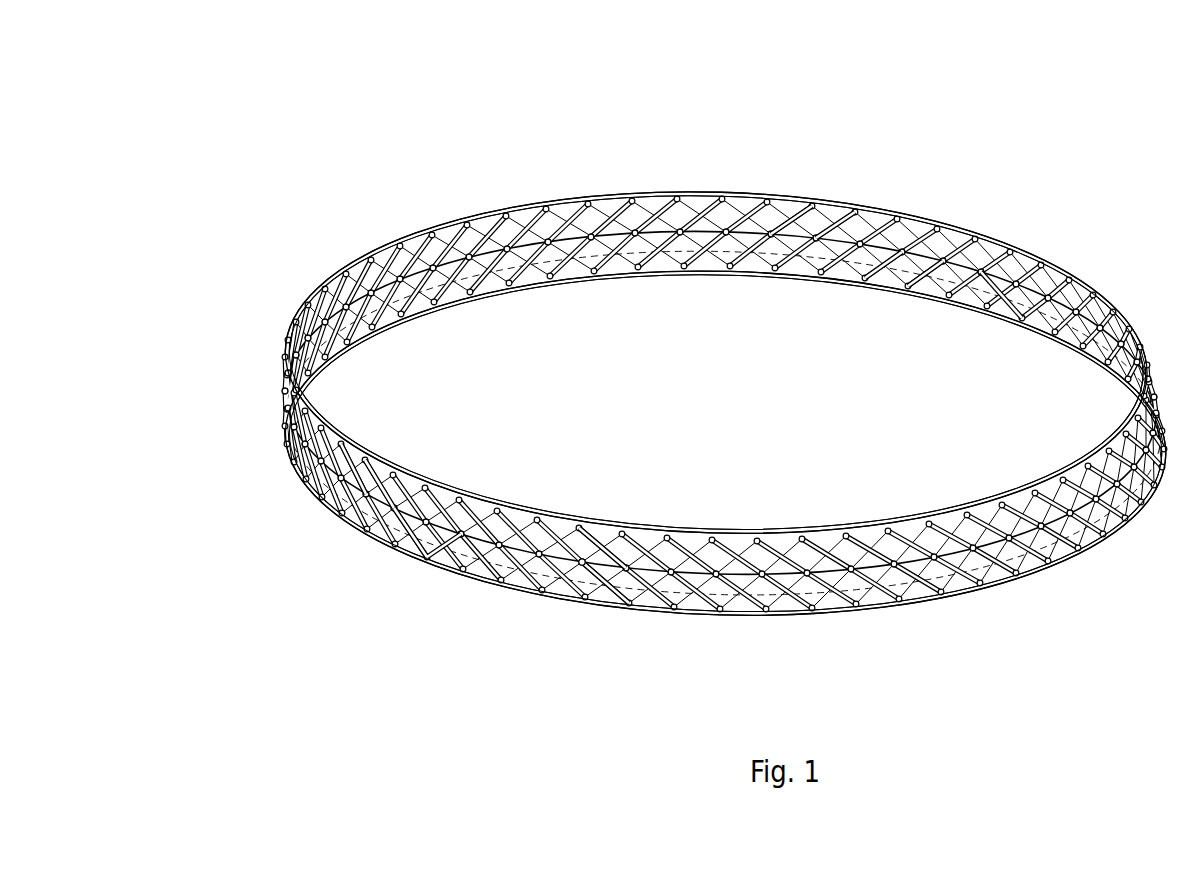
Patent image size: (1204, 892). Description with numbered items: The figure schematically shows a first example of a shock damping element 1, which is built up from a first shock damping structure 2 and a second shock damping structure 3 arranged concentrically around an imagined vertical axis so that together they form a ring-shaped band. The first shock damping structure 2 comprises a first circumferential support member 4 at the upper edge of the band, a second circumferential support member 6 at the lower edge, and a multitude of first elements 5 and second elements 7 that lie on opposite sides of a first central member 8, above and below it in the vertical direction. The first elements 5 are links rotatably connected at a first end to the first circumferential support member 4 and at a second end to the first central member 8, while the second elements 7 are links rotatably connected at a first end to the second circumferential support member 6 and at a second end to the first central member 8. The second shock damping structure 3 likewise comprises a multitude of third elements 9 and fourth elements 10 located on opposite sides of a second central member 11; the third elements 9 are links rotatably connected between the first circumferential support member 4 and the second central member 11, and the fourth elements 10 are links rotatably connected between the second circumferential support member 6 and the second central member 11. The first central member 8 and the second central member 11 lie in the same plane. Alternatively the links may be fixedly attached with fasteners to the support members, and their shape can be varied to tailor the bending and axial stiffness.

The shock damping element 1 is at (376, 128).
The first shock damping structure 2 is at (348, 528).
The second shock damping structure 3 is at (715, 176).
The first circumferential support member 4 is at (604, 198).
The first elements 5 is at (373, 480).
The second circumferential support member 6 is at (862, 611).
The second elements 7 is at (398, 528).
The first central member 8 is at (600, 564).
The third elements 9 is at (794, 220).
The fourth elements 10 is at (878, 268).
The second central member 11 is at (992, 282).